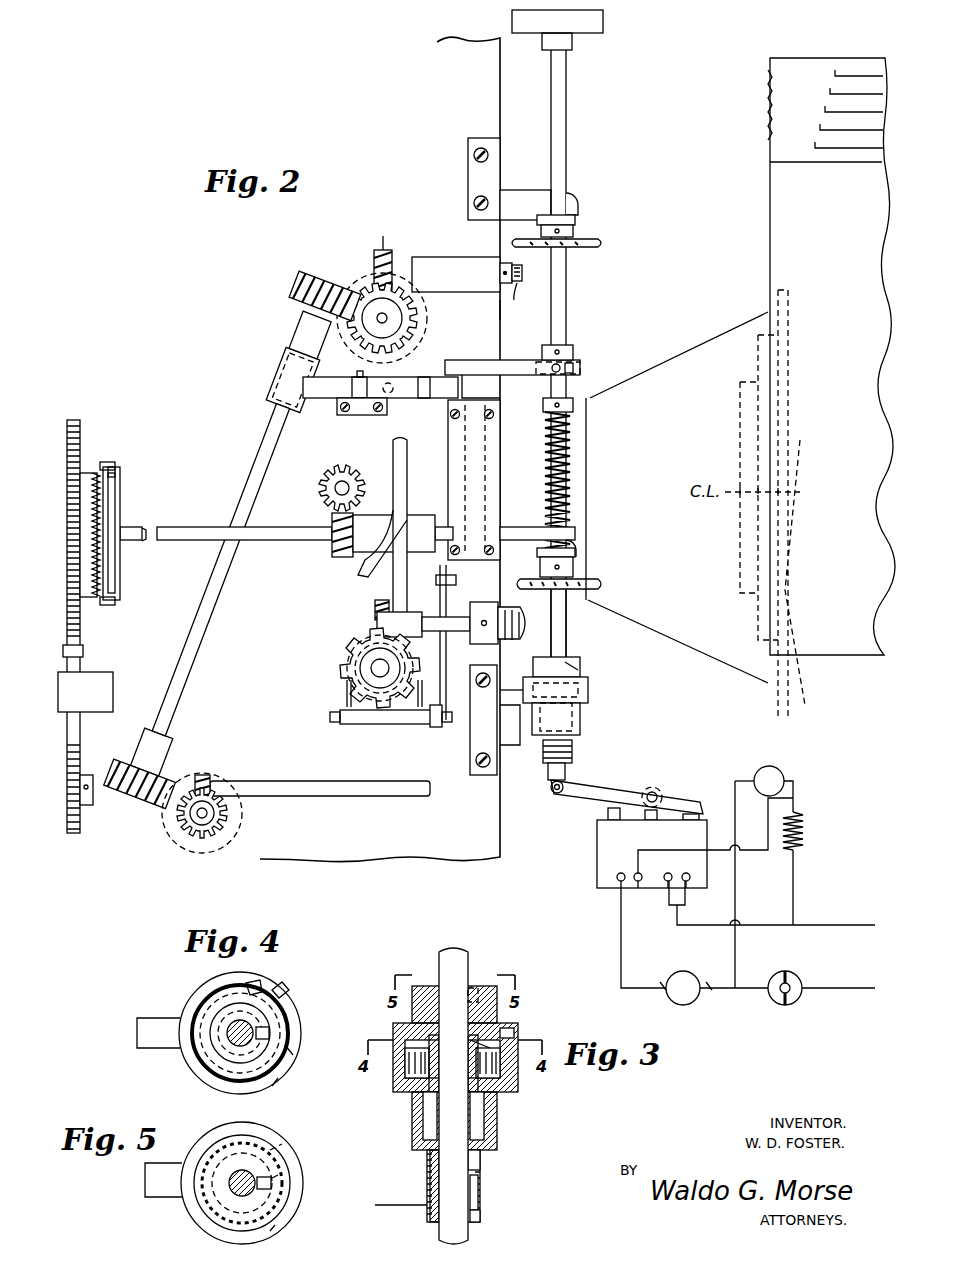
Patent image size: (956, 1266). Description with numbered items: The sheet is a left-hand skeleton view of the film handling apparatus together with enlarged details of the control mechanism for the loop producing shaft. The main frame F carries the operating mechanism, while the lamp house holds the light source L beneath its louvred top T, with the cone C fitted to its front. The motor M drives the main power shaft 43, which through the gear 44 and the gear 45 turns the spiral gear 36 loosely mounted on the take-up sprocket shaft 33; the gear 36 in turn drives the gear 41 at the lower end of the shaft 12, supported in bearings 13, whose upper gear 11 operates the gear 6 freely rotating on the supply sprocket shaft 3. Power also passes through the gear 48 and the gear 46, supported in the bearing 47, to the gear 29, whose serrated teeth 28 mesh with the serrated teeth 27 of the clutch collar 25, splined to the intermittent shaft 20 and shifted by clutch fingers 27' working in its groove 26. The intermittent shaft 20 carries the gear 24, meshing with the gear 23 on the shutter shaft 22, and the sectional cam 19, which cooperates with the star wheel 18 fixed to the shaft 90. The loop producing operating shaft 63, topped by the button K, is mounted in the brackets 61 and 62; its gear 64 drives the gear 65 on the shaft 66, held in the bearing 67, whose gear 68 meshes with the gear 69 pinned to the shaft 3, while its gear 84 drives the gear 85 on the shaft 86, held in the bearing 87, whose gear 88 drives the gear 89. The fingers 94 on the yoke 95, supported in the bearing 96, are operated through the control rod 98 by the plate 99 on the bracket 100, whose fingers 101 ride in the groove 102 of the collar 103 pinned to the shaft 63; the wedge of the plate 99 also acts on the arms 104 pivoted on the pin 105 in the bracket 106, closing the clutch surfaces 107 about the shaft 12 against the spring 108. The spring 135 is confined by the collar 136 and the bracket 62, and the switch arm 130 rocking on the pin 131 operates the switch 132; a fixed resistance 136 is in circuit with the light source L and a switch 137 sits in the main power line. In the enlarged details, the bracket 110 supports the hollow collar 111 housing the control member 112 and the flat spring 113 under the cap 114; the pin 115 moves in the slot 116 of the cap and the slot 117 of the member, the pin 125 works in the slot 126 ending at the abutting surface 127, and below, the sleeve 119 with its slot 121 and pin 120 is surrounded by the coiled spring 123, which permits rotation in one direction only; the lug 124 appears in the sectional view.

In FIG. 2, the button K is at (603, 20).
In FIG. 2, the main frame F is at (465, 211).
In FIG. 2, the top of lamp house T is at (831, 356).
In FIG. 2, the cone C is at (756, 503).
In FIG. 2, the loop producing operating shaft 63 is at (566, 112).
In FIG. 3, the loop producing operating shaft 63 is at (468, 955).
In FIG. 4, the loop producing operating shaft 63 is at (245, 1046).
In FIG. 5, the loop producing operating shaft 63 is at (245, 1180).
In FIG. 2, the bracket 61 is at (578, 200).
In FIG. 2, the gear 64 is at (598, 242).
In FIG. 2, the bearing 67 is at (425, 257).
In FIG. 2, the shaft 66 is at (505, 263).
In FIG. 2, the gear 65 is at (518, 302).
In FIG. 2, the gear 68 is at (388, 251).
In FIG. 2, the gear 6 is at (372, 285).
In FIG. 2, the gear 69 is at (388, 318).
In FIG. 2, the supply sprocket shaft 3 is at (412, 330).
In FIG. 2, the gear 11 is at (332, 274).
In FIG. 2, the bearings 13 is at (201, 529).
In FIG. 2, the clutch surfaces 107 is at (268, 366).
In FIG. 2, the shaft 12 is at (188, 557).
In FIG. 2, the gear 41 is at (130, 799).
In FIG. 2, the arms 104 is at (424, 377).
In FIG. 2, the pin 105 is at (357, 372).
In FIG. 2, the spring 108 is at (395, 392).
In FIG. 2, the bracket 106 is at (384, 410).
In FIG. 2, the plate 99 is at (480, 390).
In FIG. 2, the bracket 100 is at (492, 455).
In FIG. 2, the collar 103 is at (573, 348).
In FIG. 2, the fingers 101 is at (580, 362).
In FIG. 2, the groove 102 is at (574, 368).
In FIG. 2, the collar / fixed resistance 136 is at (573, 405).
In FIG. 2, the spring 135 is at (572, 452).
In FIG. 2, the bracket 62 is at (508, 527).
In FIG. 2, the gear 84 is at (598, 586).
In FIG. 2, the intermittent shaft 20 is at (140, 540).
In FIG. 2, the gear 23 is at (350, 468).
In FIG. 2, the shaft 22 is at (335, 487).
In FIG. 2, the gear 24 is at (340, 557).
In FIG. 2, the sectional cam 19 is at (407, 452).
In FIG. 2, the control rod 98 is at (438, 600).
In FIG. 2, the gear 88 is at (375, 608).
In FIG. 2, the shaft 86 is at (455, 632).
In FIG. 2, the bearing 87 is at (495, 610).
In FIG. 2, the gear 85 is at (566, 632).
In FIG. 2, the star wheel 18 is at (357, 652).
In FIG. 2, the fingers 94 is at (348, 660).
In FIG. 2, the gear 89 is at (394, 668).
In FIG. 2, the shaft 90 is at (385, 672).
In FIG. 2, the yoke 95 is at (347, 700).
In FIG. 2, the bearing 96 is at (340, 724).
In FIG. 2, the bracket 110 is at (505, 690).
In FIG. 4, the bracket 110 is at (137, 1035).
In FIG. 5, the bracket 110 is at (145, 1180).
In FIG. 2, the cap 114 is at (580, 662).
In FIG. 3, the cap 114 is at (490, 986).
In FIG. 5, the cap 114 is at (275, 1200).
In FIG. 2, the pin 115 is at (580, 670).
In FIG. 3, the pin 115 is at (495, 1052).
In FIG. 4, the pin 115 is at (270, 1033).
In FIG. 5, the pin 115 is at (280, 1175).
In FIG. 2, the control member 112 is at (588, 700).
In FIG. 3, the control member 112 is at (512, 1028).
In FIG. 4, the control member 112 is at (228, 988).
In FIG. 2, the hollow collar 111 is at (580, 722).
In FIG. 3, the hollow collar 111 is at (497, 1122).
In FIG. 4, the hollow collar 111 is at (200, 985).
In FIG. 2, the coiled spring 123 is at (572, 750).
In FIG. 3, the coiled spring 123 is at (482, 1165).
In FIG. 2, the sleeve 119 is at (565, 772).
In FIG. 3, the sleeve 119 is at (427, 1167).
In FIG. 2, the switch arm 130 is at (600, 795).
In FIG. 2, the pin 131 is at (655, 793).
In FIG. 2, the switch 132 is at (597, 855).
In FIG. 2, the light source L is at (759, 781).
In FIG. 2, the motor M is at (686, 988).
In FIG. 2, the switch 137 is at (798, 1000).
In FIG. 2, the gear 29 is at (80, 420).
In FIG. 2, the serrated teeth 28 is at (88, 473).
In FIG. 2, the groove 26 is at (118, 503).
In FIG. 2, the serrated teeth 27 is at (105, 507).
In FIG. 2, the clutch fingers 27' is at (125, 517).
In FIG. 2, the clutch collar 25 is at (118, 474).
In FIG. 2, the gear 46 is at (83, 655).
In FIG. 2, the bearing 47 is at (113, 688).
In FIG. 2, the gear 48 is at (80, 760).
In FIG. 2, the main power shaft 43 is at (93, 800).
In FIG. 2, the gear 44 is at (212, 778).
In FIG. 2, the take-up sprocket shaft 33 is at (195, 822).
In FIG. 2, the gear 45 is at (215, 822).
In FIG. 2, the spiral gear 36 is at (243, 818).
In FIG. 3, the slot 116 is at (474, 986).
In FIG. 5, the slot 116 is at (272, 1183).
In FIG. 3, the flat spring 113 is at (405, 1070).
In FIG. 4, the flat spring 113 is at (200, 1012).
In FIG. 3, the pin 125 is at (502, 1062).
In FIG. 4, the pin 125 is at (285, 988).
In FIG. 5, the pin 125 is at (285, 1145).
In FIG. 3, the slot 126 is at (512, 1030).
In FIG. 4, the slot 126 is at (294, 1012).
In FIG. 3, the slot 117 is at (410, 1040).
In FIG. 4, the slot 117 is at (214, 1043).
In FIG. 5, the slot 117 is at (230, 1145).
In FIG. 3, the slot 121 is at (478, 1185).
In FIG. 3, the pin 120 is at (480, 1216).
In FIG. 4, the lug 124 is at (258, 990).
In FIG. 4, the abutting surface 127 is at (285, 1070).
In FIG. 5, the abutting surface 127 is at (283, 1230).